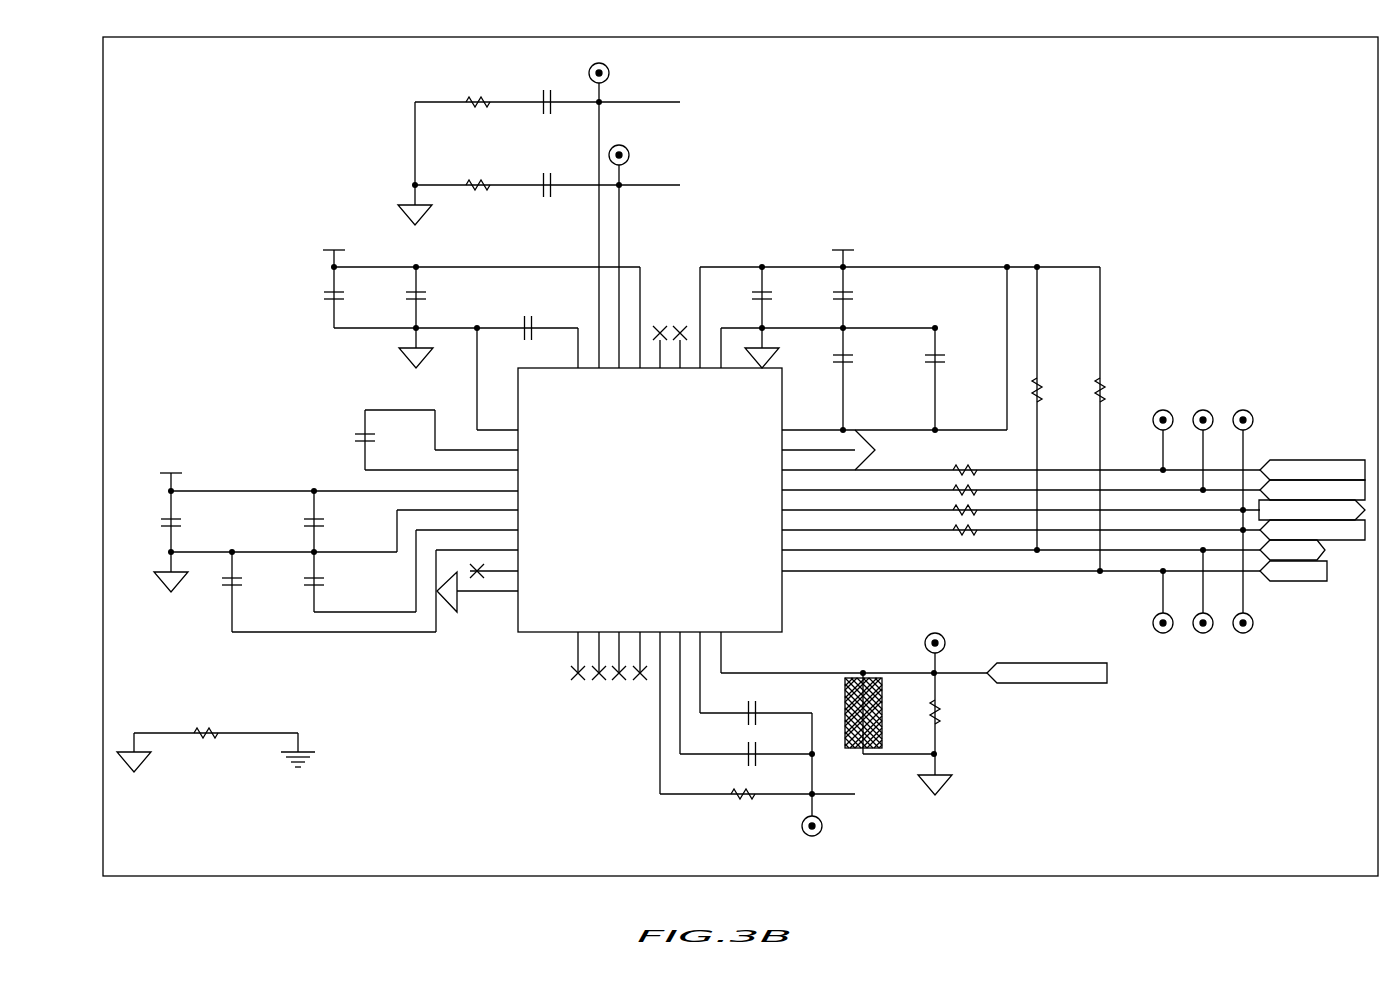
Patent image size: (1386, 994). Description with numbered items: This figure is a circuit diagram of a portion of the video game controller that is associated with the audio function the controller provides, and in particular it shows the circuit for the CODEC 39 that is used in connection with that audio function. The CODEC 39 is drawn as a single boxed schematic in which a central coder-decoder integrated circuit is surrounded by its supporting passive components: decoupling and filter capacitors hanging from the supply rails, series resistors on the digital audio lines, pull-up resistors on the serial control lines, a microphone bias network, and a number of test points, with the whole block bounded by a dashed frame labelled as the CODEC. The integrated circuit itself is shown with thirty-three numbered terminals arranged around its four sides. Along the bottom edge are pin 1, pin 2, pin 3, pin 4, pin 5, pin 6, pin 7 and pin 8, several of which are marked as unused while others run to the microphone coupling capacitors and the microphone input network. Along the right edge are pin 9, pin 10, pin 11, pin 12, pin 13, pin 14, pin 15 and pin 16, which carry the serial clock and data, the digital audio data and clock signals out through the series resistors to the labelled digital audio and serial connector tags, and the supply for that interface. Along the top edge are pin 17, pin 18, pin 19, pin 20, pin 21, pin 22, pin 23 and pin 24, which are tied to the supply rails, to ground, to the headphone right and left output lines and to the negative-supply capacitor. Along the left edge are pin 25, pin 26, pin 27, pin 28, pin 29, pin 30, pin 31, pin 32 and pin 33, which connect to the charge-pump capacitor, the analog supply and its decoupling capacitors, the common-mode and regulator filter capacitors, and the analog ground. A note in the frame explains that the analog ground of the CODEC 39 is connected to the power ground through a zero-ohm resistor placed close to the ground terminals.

The CODEC 39 is at (692, 456).
The LIN3 pin 1 is at (572, 656).
The RIN2 pin 2 is at (593, 656).
The LIN2 pin 3 is at (613, 656).
The MPWR2 pin 4 is at (634, 656).
The MPWR1 pin 5 is at (748, 715).
The RIN1 pin 6 is at (736, 699).
The LIN1 pin 7 is at (746, 678).
The PDN pin 8 is at (844, 652).
The SCL pin 9 is at (1021, 562).
The SDA pin 10 is at (1021, 541).
The SDTI pin 11 is at (1021, 521).
The SDTO pin 12 is at (1021, 501).
The LRCK pin 13 is at (1021, 482).
The BICK pin 14 is at (1021, 461).
The MCKI pin 15 is at (818, 441).
The TVDD pin 16 is at (894, 421).
The VSS3 pin 17 is at (712, 348).
The SVDD pin 18 is at (691, 317).
The SPN pin 19 is at (674, 347).
The SPP pin 20 is at (654, 347).
The DVDD pin 21 is at (631, 317).
The HPL pin 22 is at (610, 266).
The HPR pin 23 is at (590, 225).
The VEE pin 24 is at (569, 348).
The VSS2 pin 25 is at (497, 421).
The CP pin 26 is at (441, 430).
The CN pin 27 is at (441, 440).
The AVDD pin 28 is at (344, 482).
The VSS1 pin 29 is at (457, 522).
The VCOM pin 30 is at (416, 562).
The REGFIL pin 31 is at (375, 582).
The RIN3 pin 32 is at (494, 565).
The GND pin 33 is at (477, 592).